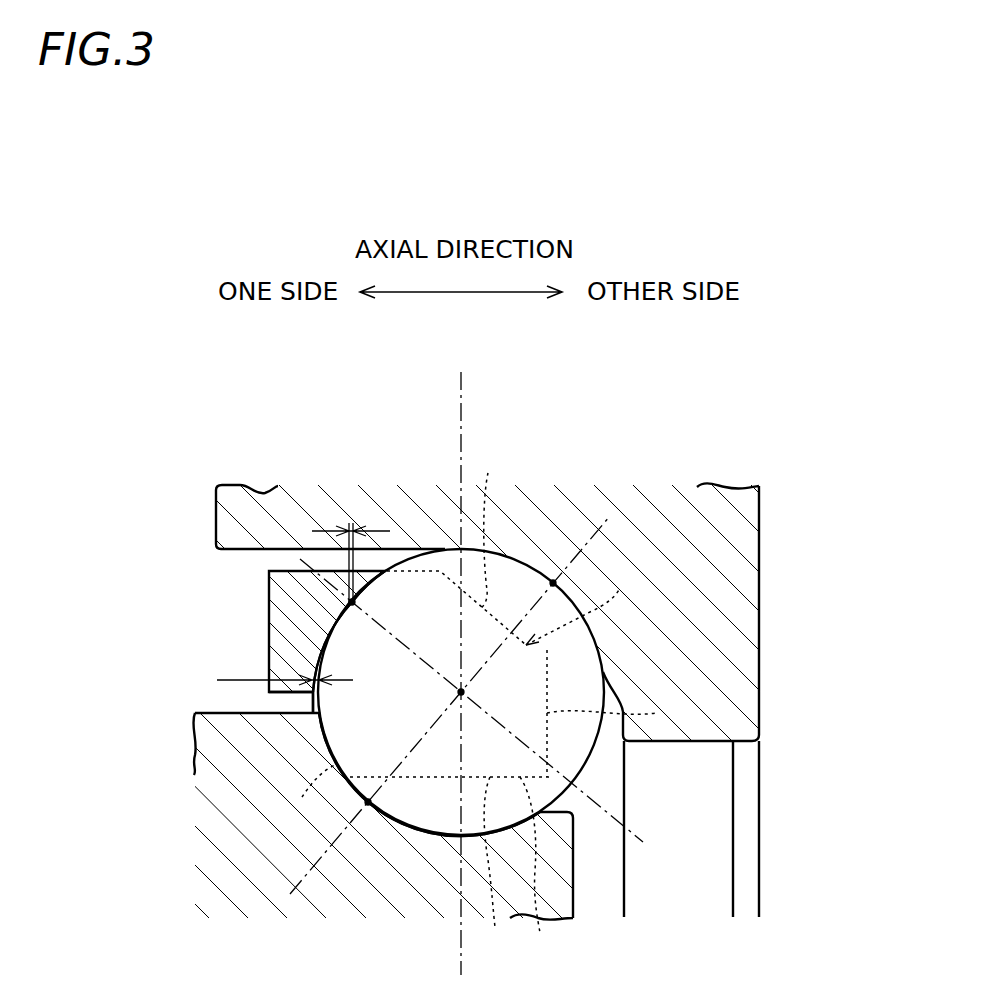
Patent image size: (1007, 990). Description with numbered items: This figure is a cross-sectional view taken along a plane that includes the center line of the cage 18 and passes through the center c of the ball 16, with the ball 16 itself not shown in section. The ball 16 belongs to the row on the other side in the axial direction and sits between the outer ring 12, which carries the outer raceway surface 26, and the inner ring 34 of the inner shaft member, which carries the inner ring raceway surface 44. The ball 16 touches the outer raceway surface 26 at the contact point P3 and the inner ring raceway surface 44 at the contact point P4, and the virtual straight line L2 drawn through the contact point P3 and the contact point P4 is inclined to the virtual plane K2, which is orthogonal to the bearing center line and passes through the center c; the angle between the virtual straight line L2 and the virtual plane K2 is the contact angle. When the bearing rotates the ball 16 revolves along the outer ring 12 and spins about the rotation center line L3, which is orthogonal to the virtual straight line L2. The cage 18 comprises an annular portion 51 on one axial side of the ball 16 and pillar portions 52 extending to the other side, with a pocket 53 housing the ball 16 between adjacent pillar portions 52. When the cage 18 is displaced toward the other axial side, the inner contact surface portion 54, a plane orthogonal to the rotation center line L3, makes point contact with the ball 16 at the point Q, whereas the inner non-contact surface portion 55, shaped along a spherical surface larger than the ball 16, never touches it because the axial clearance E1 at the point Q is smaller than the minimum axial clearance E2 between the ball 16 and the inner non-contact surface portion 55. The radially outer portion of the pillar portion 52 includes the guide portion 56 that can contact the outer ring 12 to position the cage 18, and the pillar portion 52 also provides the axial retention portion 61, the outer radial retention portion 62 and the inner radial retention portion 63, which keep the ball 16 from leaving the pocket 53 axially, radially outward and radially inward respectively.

The outer ring 12 is at (573, 898).
The ball 16 is at (583, 770).
The cage 18 is at (256, 696).
The outer raceway surface 26 is at (395, 816).
The inner ring 34 is at (706, 616).
The inner ring raceway surface 44 is at (535, 570).
The annular portion 51 is at (288, 587).
The pillar portion 52 is at (539, 873).
The pocket 53 is at (588, 601).
The inner contact surface portion 54 is at (358, 599).
The inner non-contact surface portion 55 is at (323, 653).
The guide portion 56 is at (305, 796).
The axial retention portion 61 is at (518, 713).
The outer radial retention portion 62 is at (490, 873).
The inner radial retention portion 63 is at (453, 545).
The virtual plane K2 is at (462, 384).
The virtual straight line L2 is at (307, 878).
The rotation center line L3 is at (410, 648).
The contact point P3 is at (368, 802).
The contact point P4 is at (553, 583).
The point Q is at (352, 602).
The center of the ball c is at (461, 692).
The clearance E1 is at (351, 549).
The clearance E2 is at (285, 668).